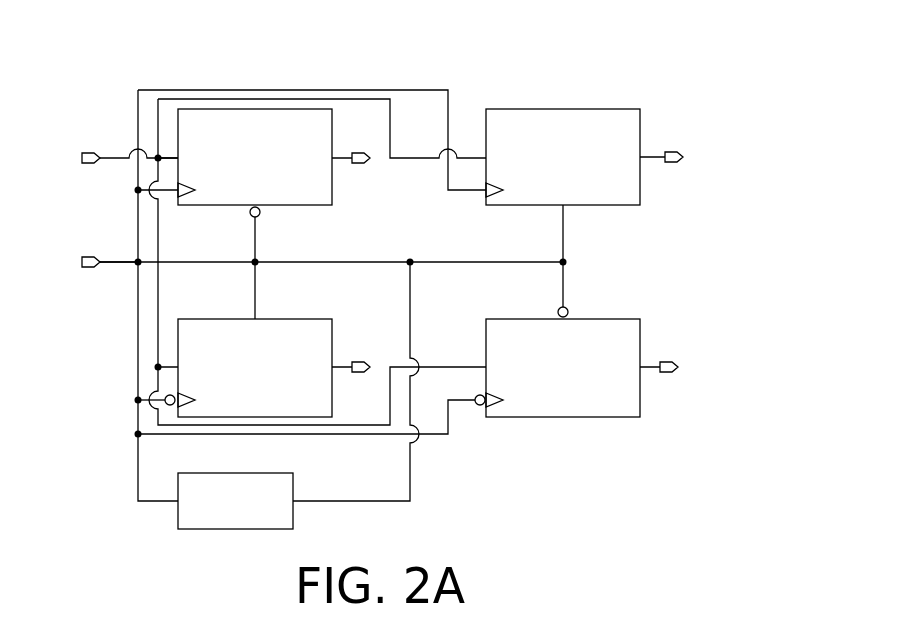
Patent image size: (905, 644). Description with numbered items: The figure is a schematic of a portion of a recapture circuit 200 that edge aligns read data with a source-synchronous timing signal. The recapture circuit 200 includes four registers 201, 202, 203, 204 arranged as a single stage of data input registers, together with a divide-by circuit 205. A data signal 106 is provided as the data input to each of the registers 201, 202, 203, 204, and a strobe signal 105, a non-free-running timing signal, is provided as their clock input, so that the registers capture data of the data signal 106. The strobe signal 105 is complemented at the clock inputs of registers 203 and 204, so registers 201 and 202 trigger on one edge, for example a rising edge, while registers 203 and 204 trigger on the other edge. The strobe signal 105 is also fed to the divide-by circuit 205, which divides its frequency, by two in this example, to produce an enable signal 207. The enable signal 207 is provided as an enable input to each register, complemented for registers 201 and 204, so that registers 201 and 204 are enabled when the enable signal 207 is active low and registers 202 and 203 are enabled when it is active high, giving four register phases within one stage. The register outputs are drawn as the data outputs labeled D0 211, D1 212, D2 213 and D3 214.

The recapture circuit 200 is at (608, 72).
The data signal 106 is at (43, 166).
The strobe signal 105 is at (43, 266).
The register 201 is at (240, 178).
The register 202 is at (548, 178).
The register 203 is at (240, 388).
The register 204 is at (548, 388).
The divide-by circuit 205 is at (220, 520).
The enable signal 207 is at (410, 478).
The D0 output 211 is at (370, 161).
The D1 output 212 is at (683, 156).
The D2 output 213 is at (371, 364).
The D3 output 214 is at (678, 365).